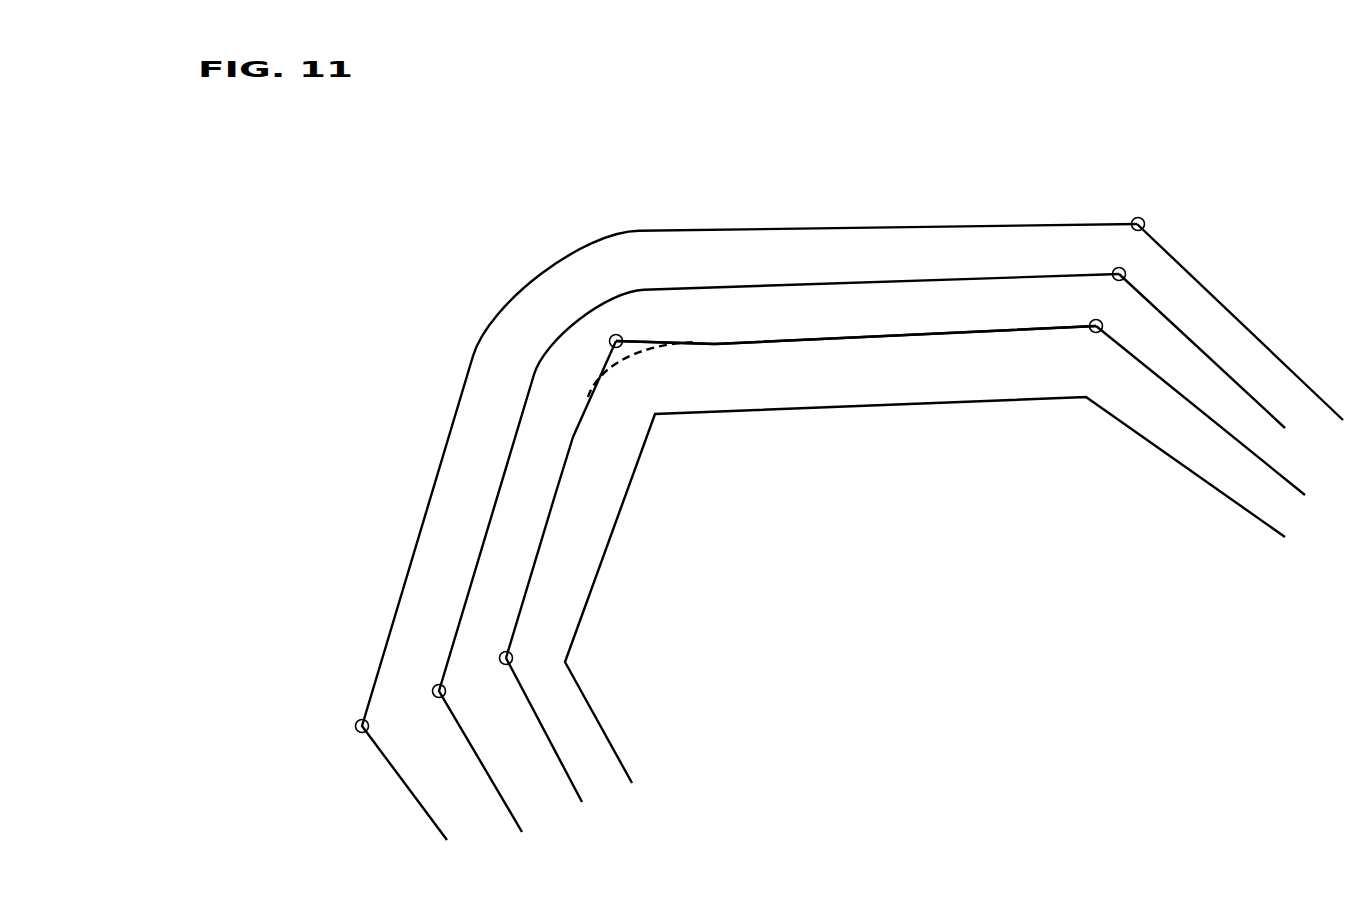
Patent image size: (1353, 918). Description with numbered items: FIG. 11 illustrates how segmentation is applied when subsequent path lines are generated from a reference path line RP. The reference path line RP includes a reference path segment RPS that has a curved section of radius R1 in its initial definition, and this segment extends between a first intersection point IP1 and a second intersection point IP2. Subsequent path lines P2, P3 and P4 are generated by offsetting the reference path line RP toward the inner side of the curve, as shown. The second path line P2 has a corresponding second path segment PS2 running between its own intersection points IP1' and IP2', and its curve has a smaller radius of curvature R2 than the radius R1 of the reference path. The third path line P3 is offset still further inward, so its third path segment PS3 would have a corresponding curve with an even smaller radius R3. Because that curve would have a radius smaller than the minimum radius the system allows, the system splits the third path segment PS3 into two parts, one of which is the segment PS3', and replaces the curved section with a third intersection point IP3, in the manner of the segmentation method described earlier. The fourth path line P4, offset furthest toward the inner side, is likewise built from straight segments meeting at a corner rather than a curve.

The reference path line RP is at (852, 495).
The reference path segment RPS is at (695, 231).
The radius of curved section R1 is at (521, 265).
The radius of curved section of second path line R2 is at (583, 325).
The radius of curved section of third path line R3 is at (626, 378).
The second path line P2 is at (862, 532).
The second path segment PS2 is at (866, 280).
The third path line P3 is at (905, 557).
The third path segment PS3 is at (856, 389).
The first split third path segment PS3' is at (594, 547).
The fourth path line P4 is at (733, 413).
The first intersection point IP1 is at (329, 712).
The first intersection point of second path line IP1' is at (427, 666).
The second intersection point IP2 is at (1167, 197).
The second intersection point of second path line IP2' is at (1094, 258).
The third intersection point IP3 is at (615, 334).